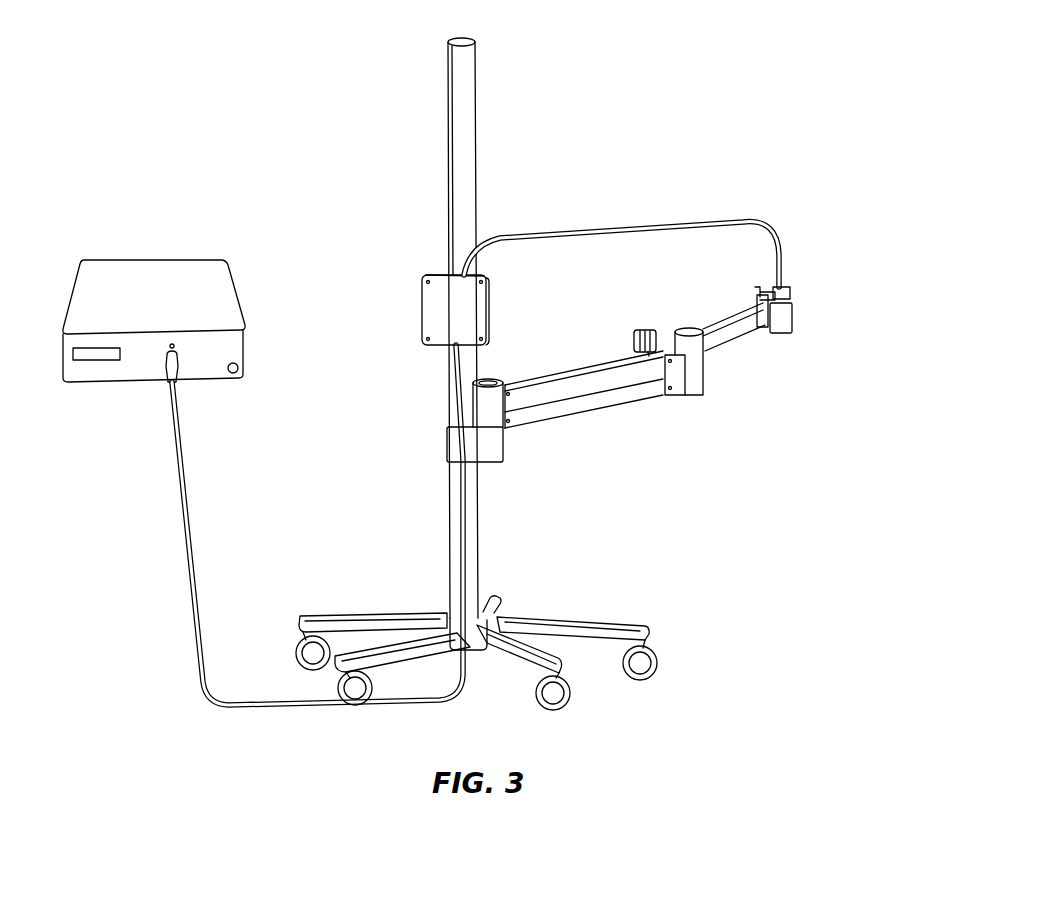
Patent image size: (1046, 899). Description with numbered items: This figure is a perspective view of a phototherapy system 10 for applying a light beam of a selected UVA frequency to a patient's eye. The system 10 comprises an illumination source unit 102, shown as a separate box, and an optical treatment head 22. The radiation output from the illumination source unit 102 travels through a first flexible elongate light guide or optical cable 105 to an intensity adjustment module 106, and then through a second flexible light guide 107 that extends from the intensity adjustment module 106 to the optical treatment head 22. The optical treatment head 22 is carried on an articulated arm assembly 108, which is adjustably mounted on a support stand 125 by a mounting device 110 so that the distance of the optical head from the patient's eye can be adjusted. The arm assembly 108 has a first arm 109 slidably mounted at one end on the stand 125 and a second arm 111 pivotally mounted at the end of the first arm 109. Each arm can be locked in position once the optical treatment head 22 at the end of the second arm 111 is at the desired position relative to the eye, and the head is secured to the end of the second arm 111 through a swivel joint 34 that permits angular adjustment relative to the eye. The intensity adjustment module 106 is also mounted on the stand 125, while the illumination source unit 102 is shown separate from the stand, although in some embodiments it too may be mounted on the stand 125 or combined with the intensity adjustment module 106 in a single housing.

The system 10 is at (678, 82).
The optical treatment head 22 is at (787, 317).
The swivel joint 34 is at (767, 320).
The illumination source unit 102 is at (240, 284).
The first flexible elongate light guide or optical cable 105 is at (232, 693).
The intensity adjustment module 106 is at (490, 317).
The second flexible light guide 107 is at (575, 232).
The articulated arm assembly 108 is at (602, 407).
The first arm 109 is at (520, 397).
The mounting device 110 is at (492, 450).
The second arm 111 is at (730, 312).
The support stand 125 is at (476, 140).